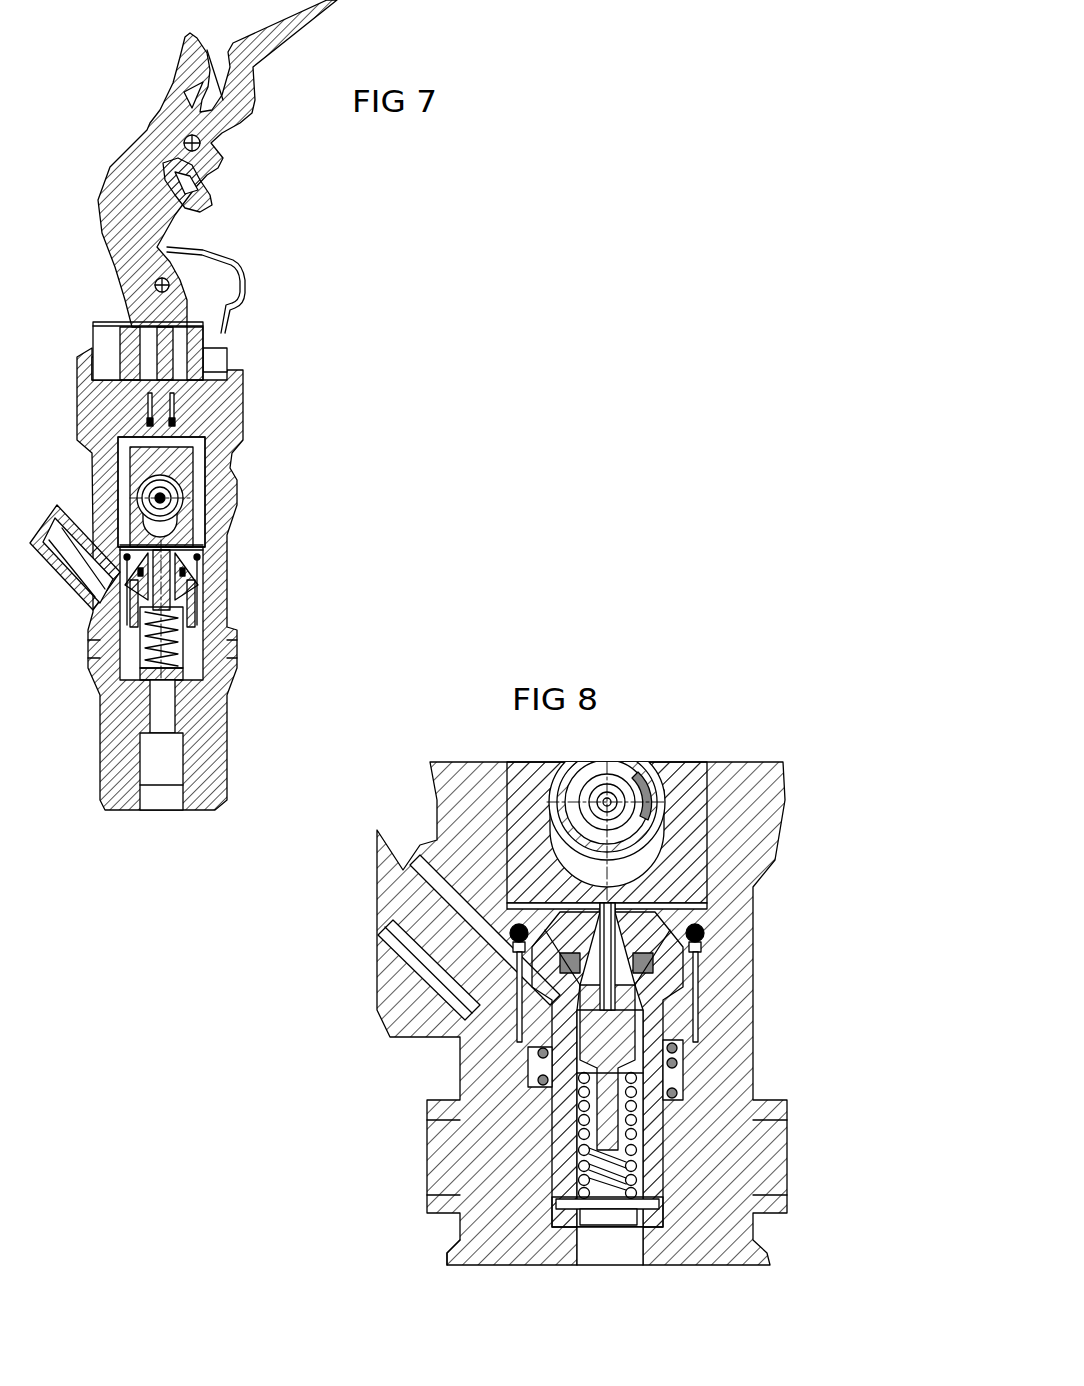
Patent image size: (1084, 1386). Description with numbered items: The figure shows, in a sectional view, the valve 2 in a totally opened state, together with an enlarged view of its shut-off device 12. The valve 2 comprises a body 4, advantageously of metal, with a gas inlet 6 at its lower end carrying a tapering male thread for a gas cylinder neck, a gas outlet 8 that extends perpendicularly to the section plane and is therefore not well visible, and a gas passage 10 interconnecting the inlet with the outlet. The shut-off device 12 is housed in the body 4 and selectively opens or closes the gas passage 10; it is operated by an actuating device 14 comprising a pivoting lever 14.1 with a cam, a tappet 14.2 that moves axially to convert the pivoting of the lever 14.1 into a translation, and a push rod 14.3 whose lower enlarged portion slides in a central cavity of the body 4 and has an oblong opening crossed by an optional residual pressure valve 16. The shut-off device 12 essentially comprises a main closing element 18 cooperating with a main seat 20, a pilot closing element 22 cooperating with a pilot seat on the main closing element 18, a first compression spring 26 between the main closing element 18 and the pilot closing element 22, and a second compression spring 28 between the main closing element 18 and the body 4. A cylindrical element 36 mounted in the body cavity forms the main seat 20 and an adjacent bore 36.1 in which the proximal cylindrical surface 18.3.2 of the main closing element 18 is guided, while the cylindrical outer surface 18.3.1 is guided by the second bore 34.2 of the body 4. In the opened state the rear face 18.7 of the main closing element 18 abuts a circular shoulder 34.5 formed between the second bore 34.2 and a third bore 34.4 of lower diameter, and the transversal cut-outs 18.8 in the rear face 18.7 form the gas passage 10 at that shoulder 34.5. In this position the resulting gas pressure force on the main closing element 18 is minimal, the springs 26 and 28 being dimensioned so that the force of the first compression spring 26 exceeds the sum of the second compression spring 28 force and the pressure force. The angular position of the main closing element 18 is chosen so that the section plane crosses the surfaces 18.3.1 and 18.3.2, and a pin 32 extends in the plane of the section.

In FIG. 7, the valve 2 is at (297, 306).
In FIG. 8, the body 4 is at (717, 887).
In FIG. 7, the gas inlet 6 is at (165, 802).
In FIG. 7, the gas outlet 8 is at (137, 493).
In FIG. 7, the gas passage 10 is at (168, 723).
In FIG. 7, the shut-off device 12 is at (255, 606).
In FIG. 7, the actuating device 14 is at (272, 428).
In FIG. 7, the pivoting lever 14.1 is at (137, 243).
In FIG. 7, the tappet 14.2 is at (205, 333).
In FIG. 7, the push rod 14.3 is at (193, 500).
In FIG. 8, the push rod 14.3 is at (520, 780).
In FIG. 7, the residual pressure valve 16 is at (228, 470).
In FIG. 8, the main closing element 18 is at (530, 1034).
In FIG. 8, the cylindrical outer surface 18.3.1 is at (553, 1140).
In FIG. 8, the proximal portion of the outer cylindrical surface 18.3.2 is at (555, 1020).
In FIG. 8, the rear face 18.7 is at (657, 1227).
In FIG. 8, the transversal cut-outs 18.8 is at (623, 1227).
In FIG. 8, the main seat 20 is at (560, 937).
In FIG. 8, the pilot closing element 22 is at (550, 1097).
In FIG. 8, the first compression spring 26 is at (630, 1133).
In FIG. 8, the second compression spring 28 is at (540, 1077).
In FIG. 8, the pin 32 is at (590, 1202).
In FIG. 8, the second bore 34.2 is at (553, 1170).
In FIG. 8, the third bore 34.4 is at (580, 1253).
In FIG. 8, the circular shoulder 34.5 is at (553, 1247).
In FIG. 8, the cylindrical element 36 is at (693, 920).
In FIG. 8, the bore 36.1 is at (683, 1027).